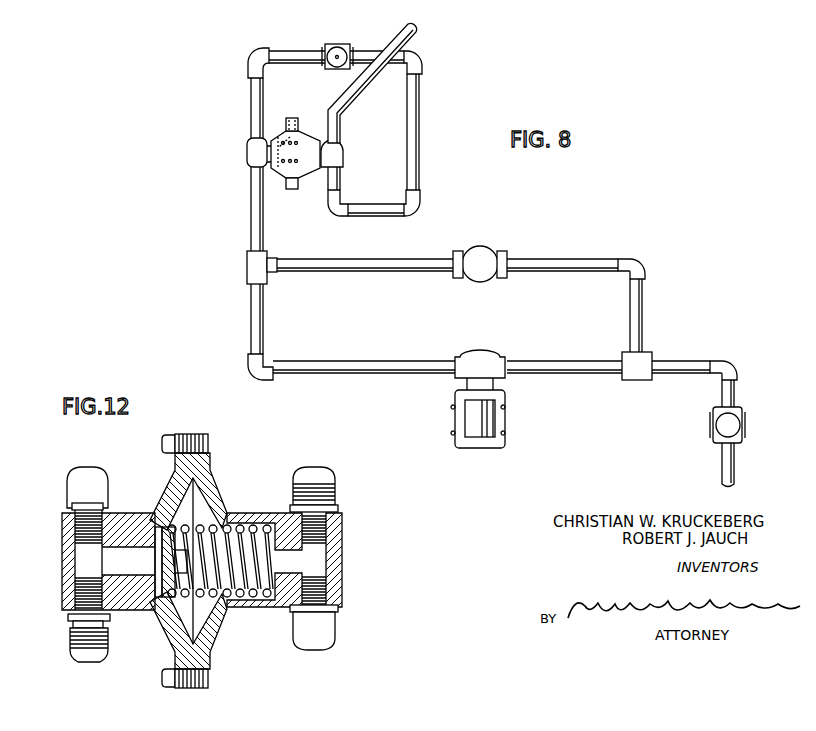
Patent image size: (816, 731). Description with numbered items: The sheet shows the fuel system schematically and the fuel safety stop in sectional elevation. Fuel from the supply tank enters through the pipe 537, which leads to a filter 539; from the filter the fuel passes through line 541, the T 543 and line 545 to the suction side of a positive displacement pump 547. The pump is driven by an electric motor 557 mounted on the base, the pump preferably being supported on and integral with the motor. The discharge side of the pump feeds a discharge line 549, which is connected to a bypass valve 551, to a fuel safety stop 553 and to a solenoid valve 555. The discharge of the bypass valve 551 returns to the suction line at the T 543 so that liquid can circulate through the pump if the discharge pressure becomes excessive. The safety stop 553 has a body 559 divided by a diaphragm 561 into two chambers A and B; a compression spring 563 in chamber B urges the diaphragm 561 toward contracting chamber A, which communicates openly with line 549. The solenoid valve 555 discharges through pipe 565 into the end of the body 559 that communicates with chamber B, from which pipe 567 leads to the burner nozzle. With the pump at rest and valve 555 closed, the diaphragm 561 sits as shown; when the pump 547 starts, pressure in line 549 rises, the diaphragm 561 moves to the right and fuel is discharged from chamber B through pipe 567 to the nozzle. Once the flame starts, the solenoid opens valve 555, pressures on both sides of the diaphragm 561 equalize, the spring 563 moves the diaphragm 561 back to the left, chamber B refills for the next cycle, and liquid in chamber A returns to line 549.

In FIG. 8, the pipe 537 is at (723, 464).
In FIG. 8, the filter 539 is at (714, 425).
In FIG. 8, the line 541 is at (728, 358).
In FIG. 8, the T 543 is at (644, 357).
In FIG. 8, the line 545 is at (555, 374).
In FIG. 8, the positive displacement pump 547 is at (488, 358).
In FIG. 8, the discharge line 549 is at (252, 98).
In FIG. 12, the discharge line 549 is at (90, 470).
In FIG. 8, the bypass valve 551 is at (476, 280).
In FIG. 8, the fuel safety stop 553 is at (312, 147).
In FIG. 12, the fuel safety stop 553 is at (211, 457).
In FIG. 8, the solenoid valve 555 is at (337, 45).
In FIG. 8, the electric motor 557 is at (506, 422).
In FIG. 8, the body 559 is at (284, 126).
In FIG. 12, the body 559 is at (173, 482).
In FIG. 8, the diaphragm 561 is at (287, 170).
In FIG. 12, the diaphragm 561 is at (165, 612).
In FIG. 8, the compression spring 563 is at (303, 158).
In FIG. 12, the compression spring 563 is at (247, 597).
In FIG. 8, the pipe 565 is at (419, 148).
In FIG. 12, the pipe 565 is at (313, 470).
In FIG. 8, the pipe 567 is at (351, 104).
In FIG. 12, the pipe 567 is at (324, 634).
In FIG. 8, the chamber A is at (273, 163).
In FIG. 12, the chamber A is at (183, 482).
In FIG. 8, the chamber B is at (310, 122).
In FIG. 12, the chamber B is at (206, 510).